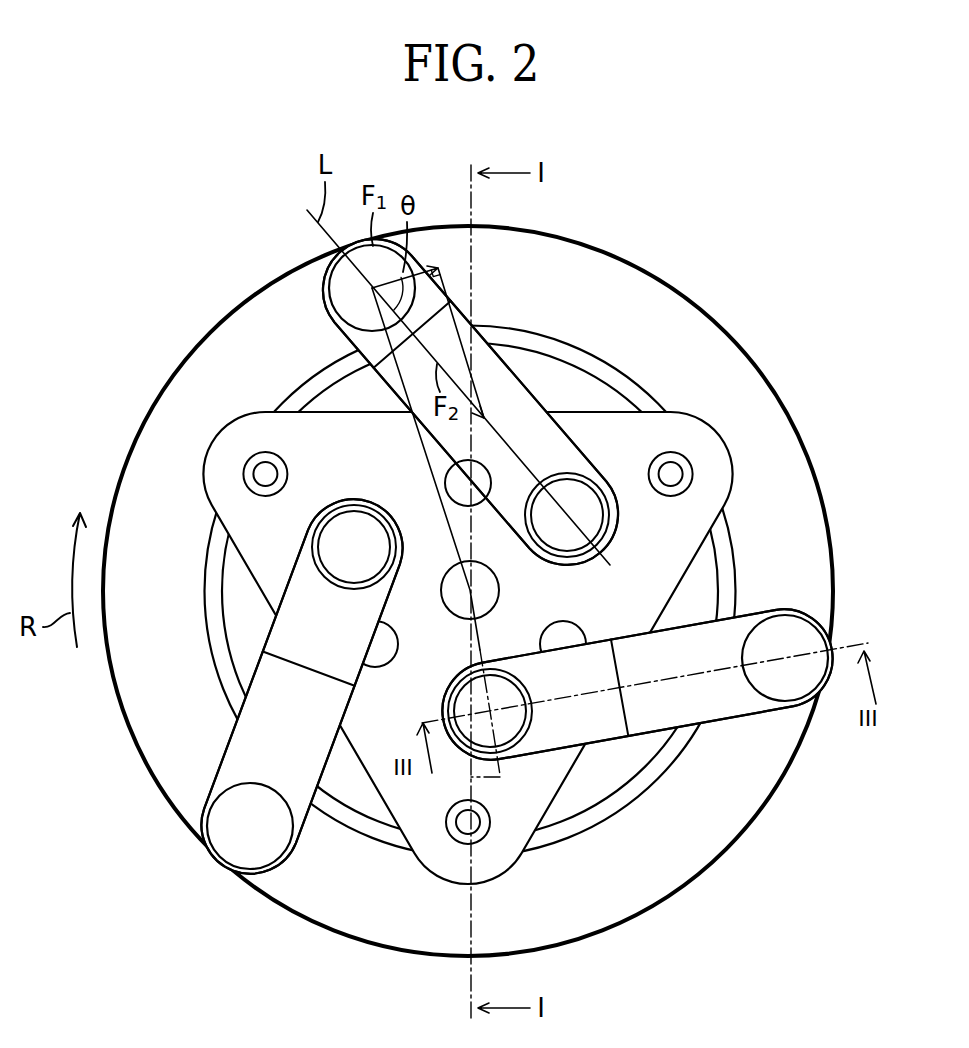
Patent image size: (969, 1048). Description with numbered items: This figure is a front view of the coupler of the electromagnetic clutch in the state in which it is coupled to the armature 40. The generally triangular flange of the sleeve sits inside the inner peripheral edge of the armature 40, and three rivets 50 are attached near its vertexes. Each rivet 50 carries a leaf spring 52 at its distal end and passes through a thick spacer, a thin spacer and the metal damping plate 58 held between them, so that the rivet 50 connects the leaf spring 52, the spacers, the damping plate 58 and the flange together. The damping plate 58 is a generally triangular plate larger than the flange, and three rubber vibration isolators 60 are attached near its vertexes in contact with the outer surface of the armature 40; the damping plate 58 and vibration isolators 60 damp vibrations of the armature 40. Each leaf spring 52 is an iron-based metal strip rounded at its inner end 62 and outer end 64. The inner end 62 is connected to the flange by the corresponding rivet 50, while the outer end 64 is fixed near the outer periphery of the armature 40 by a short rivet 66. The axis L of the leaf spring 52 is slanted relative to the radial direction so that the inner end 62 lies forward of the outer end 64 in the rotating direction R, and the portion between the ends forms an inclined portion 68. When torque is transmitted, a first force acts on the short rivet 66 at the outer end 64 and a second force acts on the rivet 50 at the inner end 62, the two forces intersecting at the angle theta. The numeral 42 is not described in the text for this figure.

The armature 40 is at (663, 298).
The ring member 42 is at (666, 383).
The rivet 50 is at (593, 531).
The leaf spring 52 is at (527, 395).
The damping plate 58 is at (690, 432).
The vibration isolator 60 is at (245, 465).
The inner end 62 is at (604, 490).
The outer end 64 is at (352, 332).
The short rivet 66 is at (352, 270).
The inclined portion 68 is at (497, 378).